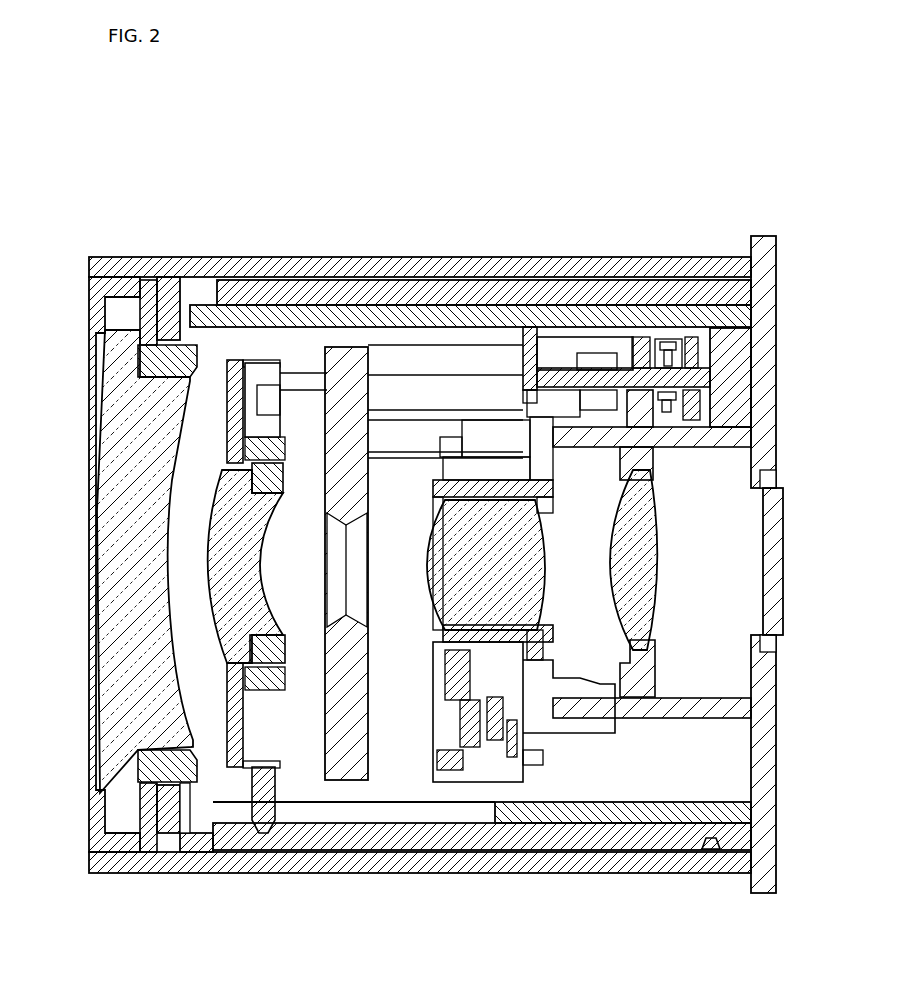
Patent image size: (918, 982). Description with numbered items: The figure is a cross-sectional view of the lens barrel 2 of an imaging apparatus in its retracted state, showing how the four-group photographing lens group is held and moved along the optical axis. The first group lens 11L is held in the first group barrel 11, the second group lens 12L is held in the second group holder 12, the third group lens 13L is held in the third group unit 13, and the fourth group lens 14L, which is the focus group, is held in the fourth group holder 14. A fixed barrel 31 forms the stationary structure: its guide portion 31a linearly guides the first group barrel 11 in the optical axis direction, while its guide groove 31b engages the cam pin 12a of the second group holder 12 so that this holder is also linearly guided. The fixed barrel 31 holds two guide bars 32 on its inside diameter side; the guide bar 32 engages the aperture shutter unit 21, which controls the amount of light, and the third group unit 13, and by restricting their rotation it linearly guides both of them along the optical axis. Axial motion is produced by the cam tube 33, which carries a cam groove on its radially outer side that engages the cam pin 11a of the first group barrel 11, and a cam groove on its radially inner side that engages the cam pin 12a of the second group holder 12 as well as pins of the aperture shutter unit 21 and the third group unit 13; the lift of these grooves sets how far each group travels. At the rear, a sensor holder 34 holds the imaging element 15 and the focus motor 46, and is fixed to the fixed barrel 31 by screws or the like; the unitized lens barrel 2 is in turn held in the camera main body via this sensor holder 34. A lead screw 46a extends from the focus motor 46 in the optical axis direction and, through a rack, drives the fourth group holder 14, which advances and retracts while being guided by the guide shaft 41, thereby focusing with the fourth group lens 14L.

The lens barrel 2 is at (468, 141).
The first group barrel 11 is at (159, 276).
The cam pin 11a is at (713, 850).
The first group lens 11L is at (118, 604).
The second group holder 12 is at (237, 352).
The cam pin 12a is at (264, 832).
The second group lens 12L is at (213, 603).
The third group unit 13 is at (460, 768).
The third group lens 13L is at (436, 588).
The fourth group holder 14 is at (645, 340).
The fourth group lens 14L is at (647, 590).
The imaging element 15 is at (770, 552).
The aperture shutter unit 21 is at (347, 370).
The fixed barrel 31 is at (452, 318).
The guide portion 31a is at (198, 848).
The guide groove 31b is at (338, 813).
The guide bar 32 is at (300, 380).
The cam tube 33 is at (524, 292).
The sensor holder 34 is at (767, 418).
The guide shaft 41 is at (708, 442).
The focus motor 46 is at (745, 363).
The lead screw 46a is at (588, 358).